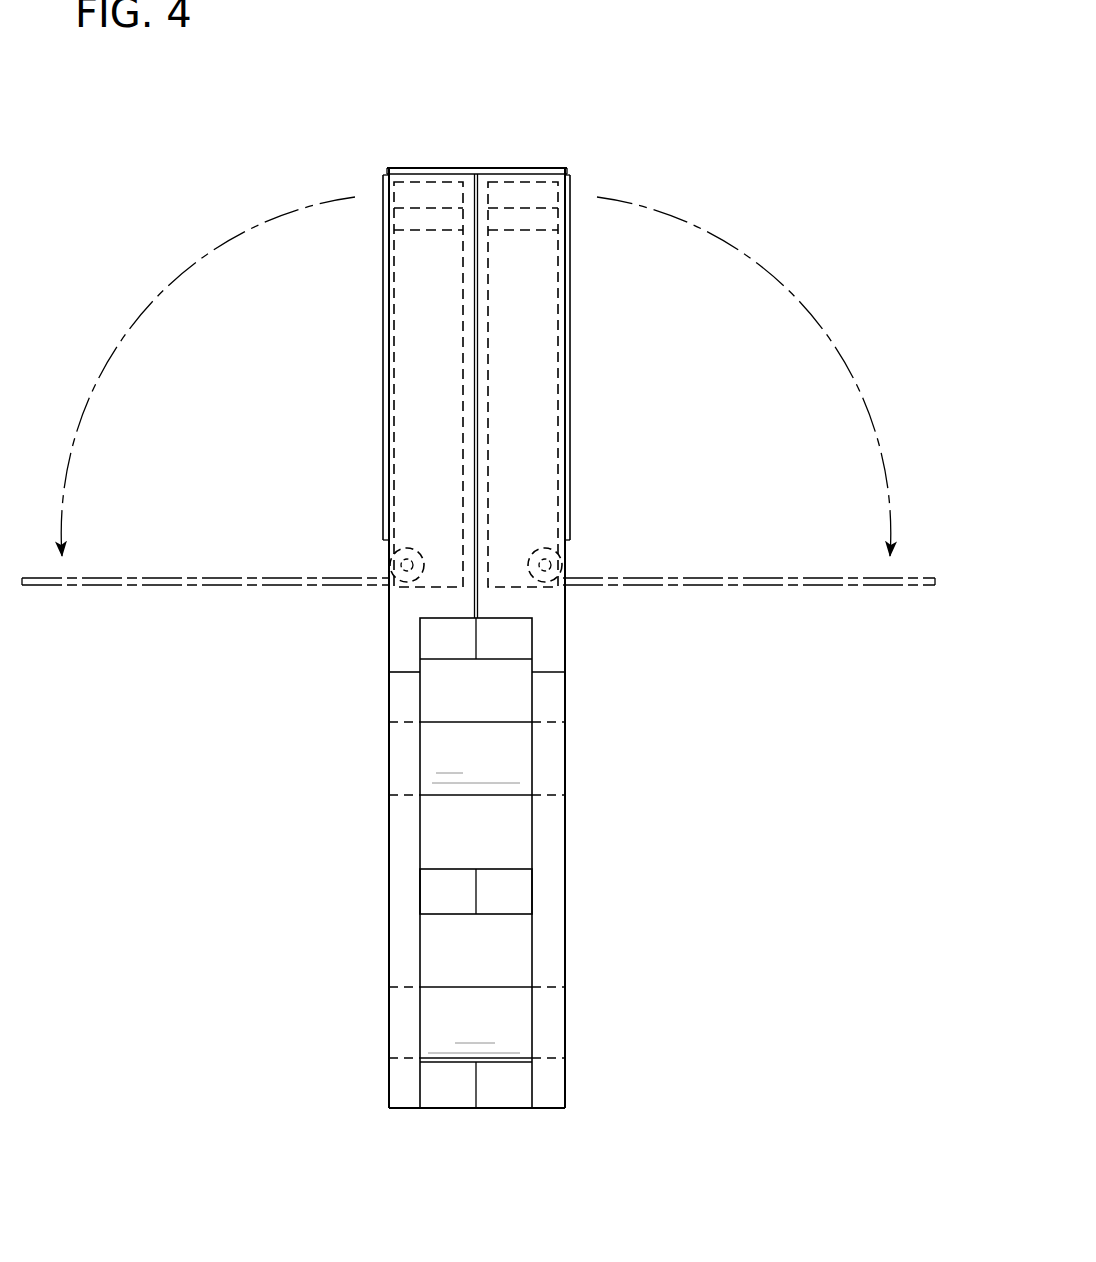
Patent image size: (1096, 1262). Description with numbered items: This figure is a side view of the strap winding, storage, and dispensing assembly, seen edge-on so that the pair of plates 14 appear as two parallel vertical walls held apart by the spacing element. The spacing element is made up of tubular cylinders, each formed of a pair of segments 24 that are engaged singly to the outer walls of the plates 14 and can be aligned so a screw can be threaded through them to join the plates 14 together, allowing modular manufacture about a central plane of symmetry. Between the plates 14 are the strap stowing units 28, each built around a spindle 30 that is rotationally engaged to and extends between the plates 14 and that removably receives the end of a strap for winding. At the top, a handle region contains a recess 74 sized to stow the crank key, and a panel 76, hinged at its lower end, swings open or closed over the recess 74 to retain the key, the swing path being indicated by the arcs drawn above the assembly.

The plate 14 is at (412, 687).
The segment 24 is at (450, 887).
The strap stowing unit 28 is at (492, 1005).
The spindle 30 is at (460, 748).
The recess 74 is at (448, 393).
The panel 76 is at (748, 577).